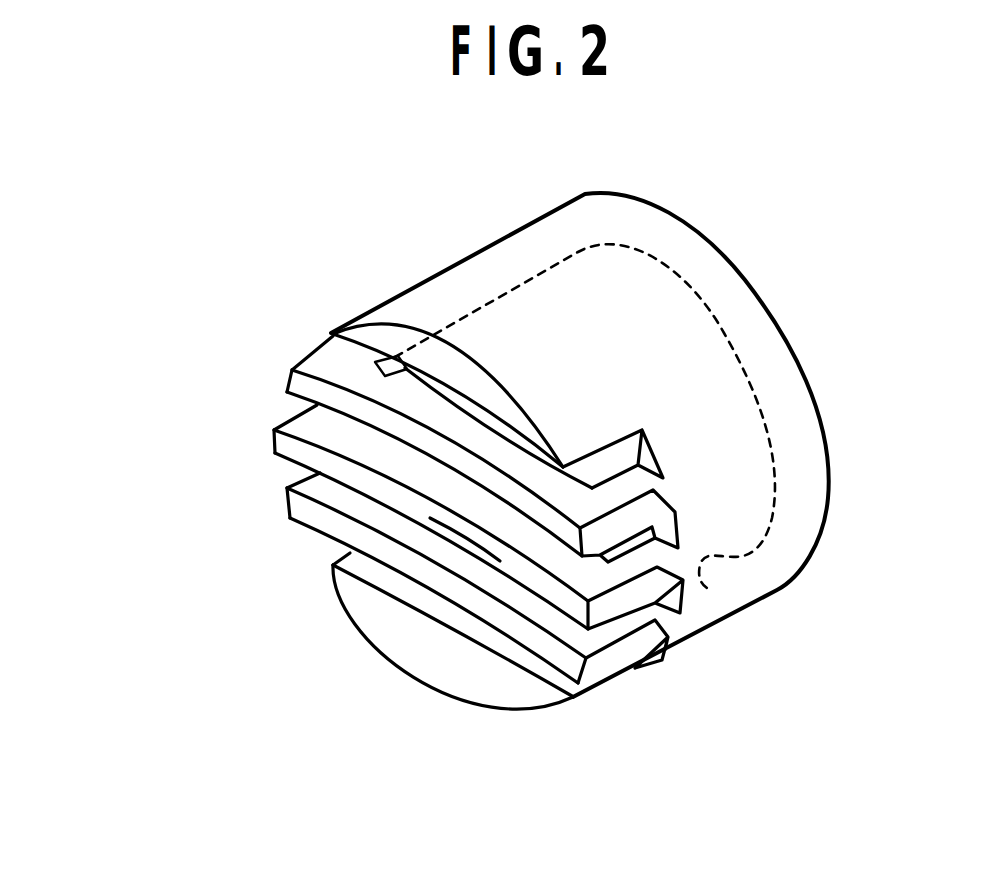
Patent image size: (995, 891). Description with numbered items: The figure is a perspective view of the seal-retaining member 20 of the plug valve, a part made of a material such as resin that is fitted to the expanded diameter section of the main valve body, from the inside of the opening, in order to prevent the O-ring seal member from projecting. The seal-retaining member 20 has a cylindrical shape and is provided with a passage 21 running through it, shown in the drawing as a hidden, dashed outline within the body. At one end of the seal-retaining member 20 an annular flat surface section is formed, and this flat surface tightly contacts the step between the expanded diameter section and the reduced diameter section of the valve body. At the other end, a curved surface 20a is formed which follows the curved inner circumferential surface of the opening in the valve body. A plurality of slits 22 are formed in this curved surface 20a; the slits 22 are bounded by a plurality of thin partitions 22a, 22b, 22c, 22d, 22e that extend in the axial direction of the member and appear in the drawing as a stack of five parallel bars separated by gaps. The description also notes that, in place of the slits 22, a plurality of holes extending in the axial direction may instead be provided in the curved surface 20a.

The seal-retaining member 20 is at (708, 231).
The curved surface 20a is at (482, 563).
The passage 21 is at (780, 592).
The slits 22 is at (219, 430).
The thin partition 22a is at (393, 338).
The thin partition 22b is at (322, 365).
The thin partition 22c is at (288, 423).
The thin partition 22d is at (300, 515).
The thin partition 22e is at (393, 612).